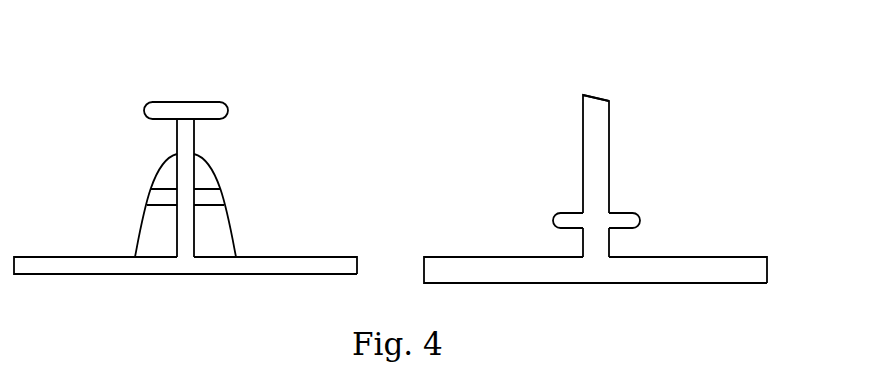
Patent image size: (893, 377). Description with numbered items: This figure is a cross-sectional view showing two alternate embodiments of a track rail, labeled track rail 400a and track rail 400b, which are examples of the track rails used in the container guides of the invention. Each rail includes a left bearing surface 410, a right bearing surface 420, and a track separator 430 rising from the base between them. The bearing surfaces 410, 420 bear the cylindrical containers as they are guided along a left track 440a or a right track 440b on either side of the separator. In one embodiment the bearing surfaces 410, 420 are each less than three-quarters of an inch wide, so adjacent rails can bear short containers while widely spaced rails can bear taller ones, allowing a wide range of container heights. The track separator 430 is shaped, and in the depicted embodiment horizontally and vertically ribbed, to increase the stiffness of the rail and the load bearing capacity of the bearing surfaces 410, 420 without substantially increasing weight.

The track rail 400a is at (63, 40).
The track rail 400b is at (730, 29).
The left bearing surface 410 is at (83, 257).
The right bearing surface 420 is at (289, 257).
The track separator 430 is at (186, 110).
The left track 440a is at (66, 141).
The right track 440b is at (305, 142).